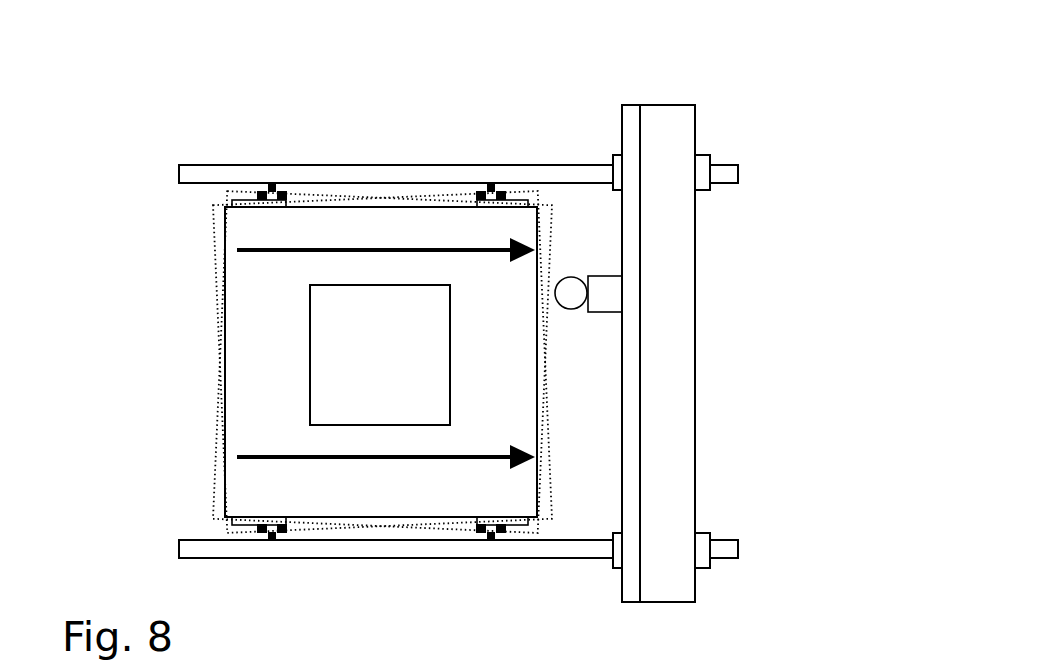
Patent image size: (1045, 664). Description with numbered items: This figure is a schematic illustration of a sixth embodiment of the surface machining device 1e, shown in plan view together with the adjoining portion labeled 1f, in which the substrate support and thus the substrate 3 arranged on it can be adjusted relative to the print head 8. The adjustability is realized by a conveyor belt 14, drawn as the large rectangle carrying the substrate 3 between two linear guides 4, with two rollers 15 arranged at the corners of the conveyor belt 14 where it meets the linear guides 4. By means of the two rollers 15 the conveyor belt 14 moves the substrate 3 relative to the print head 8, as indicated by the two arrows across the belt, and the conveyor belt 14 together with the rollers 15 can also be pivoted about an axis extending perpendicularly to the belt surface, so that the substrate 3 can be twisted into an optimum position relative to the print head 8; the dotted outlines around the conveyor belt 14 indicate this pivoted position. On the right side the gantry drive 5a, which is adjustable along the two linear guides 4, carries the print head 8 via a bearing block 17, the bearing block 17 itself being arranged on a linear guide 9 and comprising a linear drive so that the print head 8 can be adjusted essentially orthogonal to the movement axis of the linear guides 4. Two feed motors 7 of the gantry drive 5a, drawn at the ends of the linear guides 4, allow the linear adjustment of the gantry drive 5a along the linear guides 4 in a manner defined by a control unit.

The surface machining device 1e is at (650, 54).
The processing station 1f is at (658, 612).
The substrate 3 is at (330, 397).
The linear guides 4 is at (413, 173).
The gantry drive 5a is at (662, 418).
The feed motors 7 is at (705, 162).
The print head 8 is at (577, 290).
The linear guide 9 is at (633, 352).
The conveyor belt 14 is at (258, 330).
The rollers 15 is at (228, 203).
The bearing block 17 is at (607, 292).